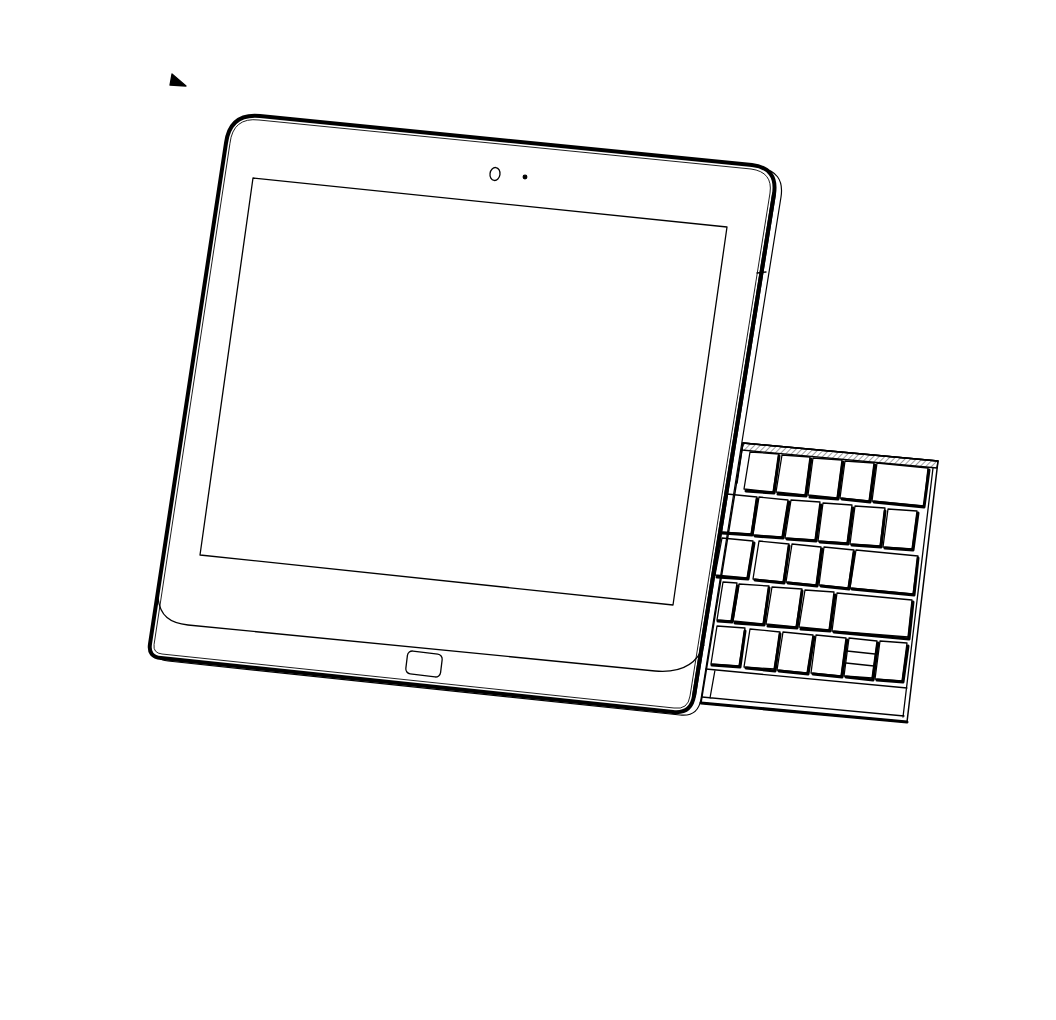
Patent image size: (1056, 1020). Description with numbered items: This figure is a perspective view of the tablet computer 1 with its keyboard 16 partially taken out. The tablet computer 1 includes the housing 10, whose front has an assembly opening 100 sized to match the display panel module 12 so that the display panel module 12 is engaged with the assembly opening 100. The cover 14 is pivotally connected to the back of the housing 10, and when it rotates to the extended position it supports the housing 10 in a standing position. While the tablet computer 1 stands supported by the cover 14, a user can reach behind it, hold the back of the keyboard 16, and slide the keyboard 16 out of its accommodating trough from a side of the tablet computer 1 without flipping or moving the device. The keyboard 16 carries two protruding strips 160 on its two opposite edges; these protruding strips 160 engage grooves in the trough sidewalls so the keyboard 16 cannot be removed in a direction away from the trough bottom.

The tablet computer 1 is at (178, 82).
The housing 10 is at (770, 237).
The assembly opening 100 is at (757, 303).
The display panel module 12 is at (258, 297).
The cover 14 is at (750, 427).
The keyboard 16 is at (923, 593).
The protruding strips 160 is at (890, 457).